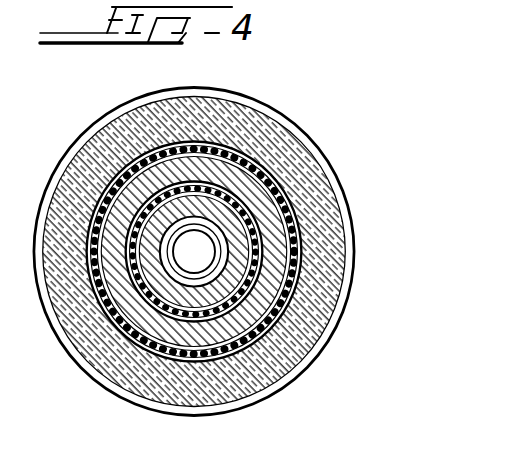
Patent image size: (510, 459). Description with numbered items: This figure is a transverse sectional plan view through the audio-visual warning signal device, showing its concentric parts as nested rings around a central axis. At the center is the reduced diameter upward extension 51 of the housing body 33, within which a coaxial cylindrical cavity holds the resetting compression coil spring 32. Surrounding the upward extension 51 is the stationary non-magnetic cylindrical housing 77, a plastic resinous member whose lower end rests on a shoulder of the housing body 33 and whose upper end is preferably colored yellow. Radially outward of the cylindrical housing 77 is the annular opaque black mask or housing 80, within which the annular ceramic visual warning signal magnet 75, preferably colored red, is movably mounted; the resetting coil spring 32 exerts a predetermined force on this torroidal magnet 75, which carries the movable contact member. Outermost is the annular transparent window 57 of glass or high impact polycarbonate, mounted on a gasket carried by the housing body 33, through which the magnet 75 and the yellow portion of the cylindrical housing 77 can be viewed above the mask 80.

The resetting compression coil spring 32 is at (173, 269).
The non-magnetic cylindrical housing 77 is at (210, 190).
The torroidal visual warning signal magnet 75 is at (268, 283).
The upward extension 51 is at (262, 222).
The opaque housing or mask 80 is at (298, 246).
The annular transparent window 57 is at (286, 165).
The housing body 33 is at (337, 183).